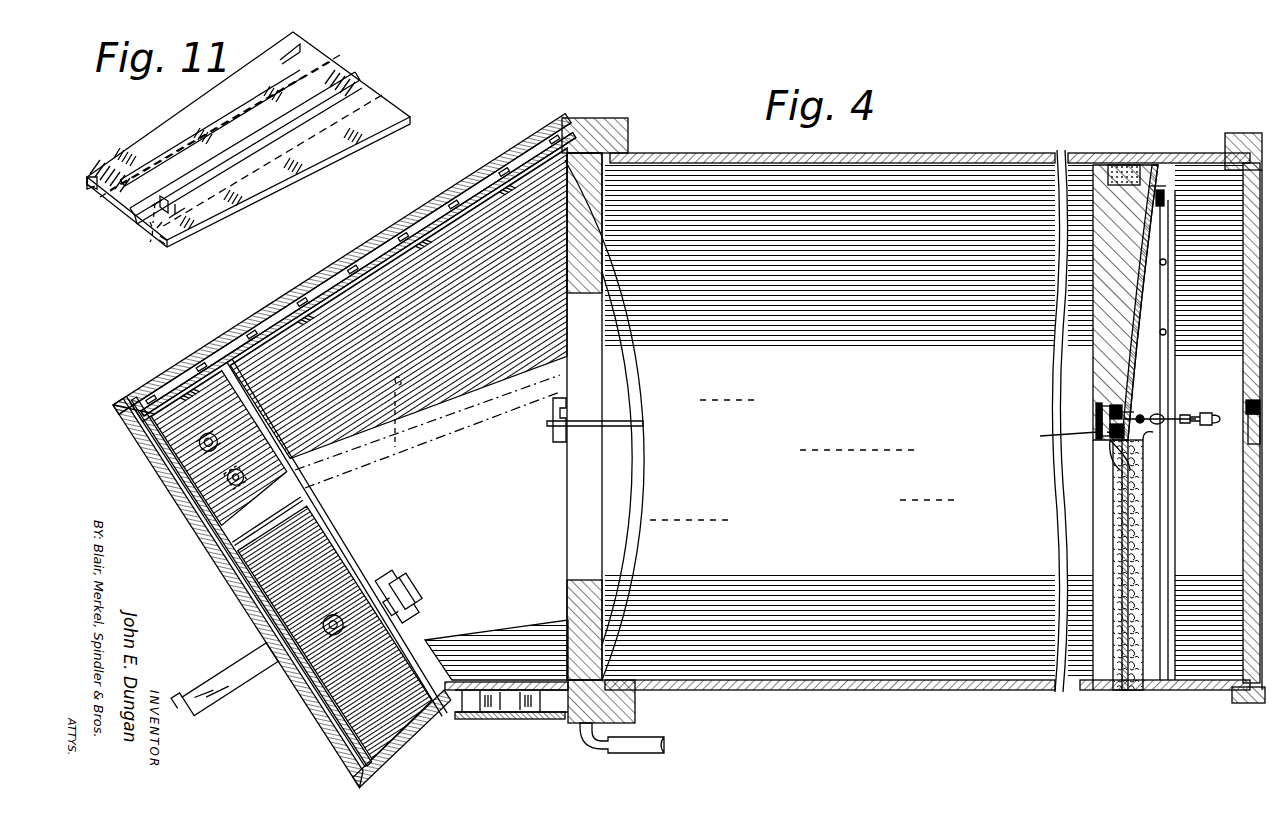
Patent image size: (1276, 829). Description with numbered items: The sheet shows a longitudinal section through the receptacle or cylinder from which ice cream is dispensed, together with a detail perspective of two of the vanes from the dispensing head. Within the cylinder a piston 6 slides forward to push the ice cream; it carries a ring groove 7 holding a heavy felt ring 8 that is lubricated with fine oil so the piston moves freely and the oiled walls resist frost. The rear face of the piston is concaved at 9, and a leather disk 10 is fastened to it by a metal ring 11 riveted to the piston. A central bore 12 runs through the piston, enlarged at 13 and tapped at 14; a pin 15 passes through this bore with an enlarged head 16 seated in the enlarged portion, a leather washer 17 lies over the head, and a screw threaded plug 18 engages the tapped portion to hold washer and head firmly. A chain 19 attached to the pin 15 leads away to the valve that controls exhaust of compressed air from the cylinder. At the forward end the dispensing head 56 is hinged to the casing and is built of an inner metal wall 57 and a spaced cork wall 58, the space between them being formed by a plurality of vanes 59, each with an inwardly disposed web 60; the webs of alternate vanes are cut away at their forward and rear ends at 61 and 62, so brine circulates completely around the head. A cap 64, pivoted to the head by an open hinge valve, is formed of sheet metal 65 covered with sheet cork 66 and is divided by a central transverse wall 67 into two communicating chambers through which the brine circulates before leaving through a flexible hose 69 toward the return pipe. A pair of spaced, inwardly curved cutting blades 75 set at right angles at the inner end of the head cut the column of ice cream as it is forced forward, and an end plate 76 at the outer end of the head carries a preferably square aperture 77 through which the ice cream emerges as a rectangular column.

In FIG. 4, the piston 6 is at (1099, 488).
In FIG. 4, the ring groove 7 is at (1150, 198).
In FIG. 4, the felt ring 8 is at (1130, 162).
In FIG. 4, the concaved rear face 9 is at (1102, 371).
In FIG. 4, the leather disk 10 is at (1158, 188).
In FIG. 4, the metal ring 11 is at (1168, 210).
In FIG. 4, the central bore 12 is at (1126, 436).
In FIG. 4, the enlarged portion of bore 13 is at (1102, 444).
In FIG. 4, the tapped portion of bore 14 is at (1097, 404).
In FIG. 4, the pin 15 is at (1164, 414).
In FIG. 4, the enlarged head 16 is at (1132, 406).
In FIG. 4, the leather washer 17 is at (1102, 419).
In FIG. 4, the screw threaded plug 18 is at (1074, 449).
In FIG. 4, the chain 19 is at (1210, 430).
In FIG. 4, the dispensing head 56 is at (377, 226).
In FIG. 4, the inner metal wall 57 is at (478, 182).
In FIG. 4, the cork wall 58 is at (438, 206).
In FIG. 11, the vanes 59 is at (164, 126).
In FIG. 4, the vanes 59 is at (322, 282).
In FIG. 11, the web 60 is at (88, 190).
In FIG. 4, the web 60 is at (295, 305).
In FIG. 11, the forward cut-away 61 is at (160, 237).
In FIG. 11, the rear cut-away 62 is at (318, 50).
In FIG. 4, the cap 64 is at (158, 483).
In FIG. 4, the sheet metal 65 is at (132, 433).
In FIG. 4, the sheet cork 66 is at (404, 766).
In FIG. 4, the central transverse wall 67 is at (253, 532).
In FIG. 4, the flexible hose 69 is at (398, 447).
In FIG. 4, the cutting blades 75 is at (595, 426).
In FIG. 4, the end plate 76 is at (230, 344).
In FIG. 4, the aperture 77 is at (310, 498).